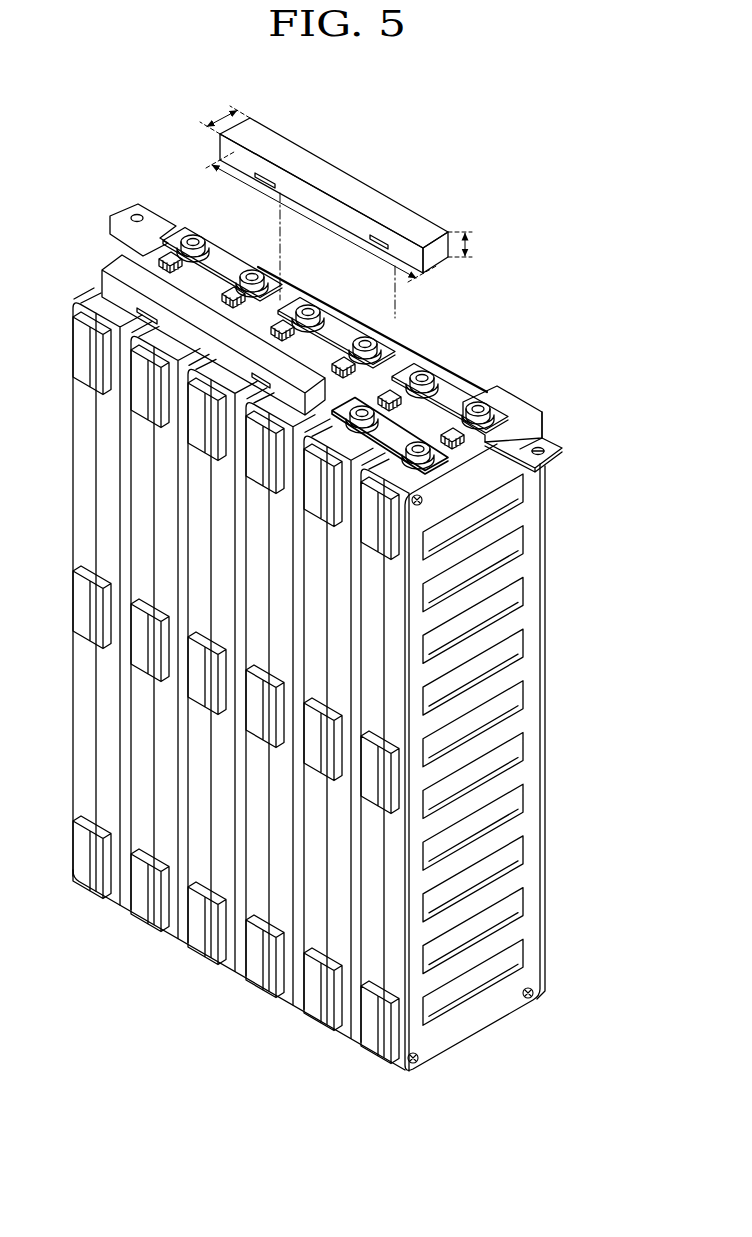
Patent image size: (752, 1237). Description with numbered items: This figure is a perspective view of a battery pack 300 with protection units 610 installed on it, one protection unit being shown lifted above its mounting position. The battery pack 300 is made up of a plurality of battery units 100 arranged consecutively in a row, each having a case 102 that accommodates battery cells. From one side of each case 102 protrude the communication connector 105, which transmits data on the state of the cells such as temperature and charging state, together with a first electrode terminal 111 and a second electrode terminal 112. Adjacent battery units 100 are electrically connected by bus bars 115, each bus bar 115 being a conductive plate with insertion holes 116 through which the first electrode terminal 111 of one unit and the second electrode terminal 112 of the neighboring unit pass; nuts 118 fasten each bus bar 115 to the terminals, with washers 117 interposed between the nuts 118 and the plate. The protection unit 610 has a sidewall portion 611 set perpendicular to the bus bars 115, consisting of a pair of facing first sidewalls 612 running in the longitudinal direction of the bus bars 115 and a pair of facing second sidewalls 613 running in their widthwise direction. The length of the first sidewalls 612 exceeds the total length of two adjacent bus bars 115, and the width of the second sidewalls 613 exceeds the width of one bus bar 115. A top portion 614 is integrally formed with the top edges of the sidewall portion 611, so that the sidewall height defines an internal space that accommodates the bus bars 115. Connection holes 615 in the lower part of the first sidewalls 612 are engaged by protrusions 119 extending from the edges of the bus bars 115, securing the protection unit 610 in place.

The battery unit 100 is at (350, 637).
The case 102 is at (532, 615).
The communication connector 105 is at (337, 357).
The first electrode terminal 111 is at (421, 371).
The second electrode terminal 112 is at (365, 406).
The bus bar 115 is at (545, 439).
The insertion hole 116 is at (560, 461).
The washer 117 is at (532, 408).
The nut 118 is at (505, 396).
The protrusion 119 is at (536, 431).
The battery pack 300 is at (84, 233).
The protection unit 610 is at (340, 191).
The sidewall portion 611 is at (340, 200).
The first sidewall 612 is at (362, 228).
The second sidewall 613 is at (433, 252).
The top portion 614 is at (326, 170).
The connection hole 615 is at (372, 250).